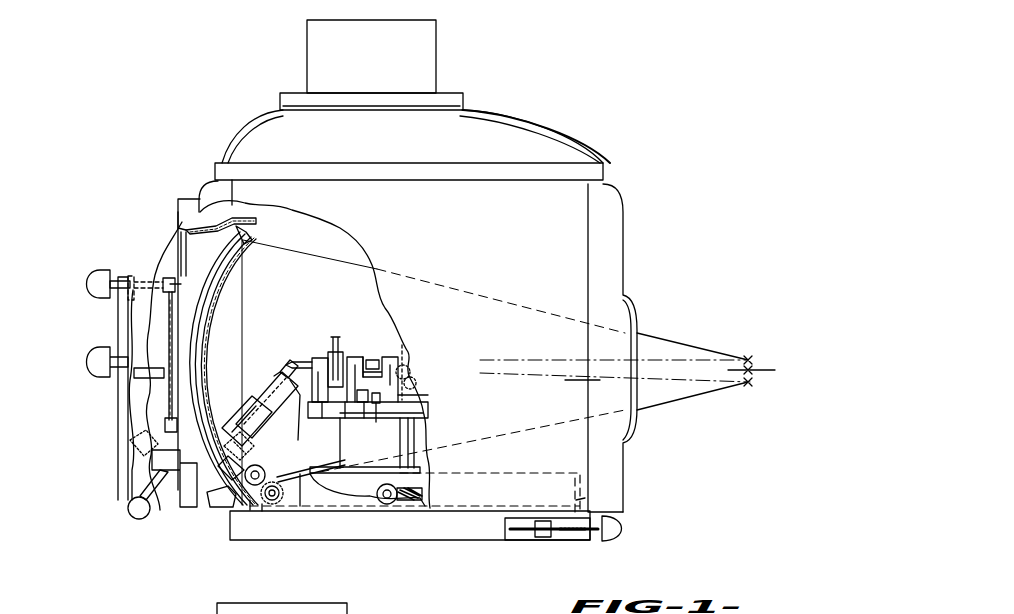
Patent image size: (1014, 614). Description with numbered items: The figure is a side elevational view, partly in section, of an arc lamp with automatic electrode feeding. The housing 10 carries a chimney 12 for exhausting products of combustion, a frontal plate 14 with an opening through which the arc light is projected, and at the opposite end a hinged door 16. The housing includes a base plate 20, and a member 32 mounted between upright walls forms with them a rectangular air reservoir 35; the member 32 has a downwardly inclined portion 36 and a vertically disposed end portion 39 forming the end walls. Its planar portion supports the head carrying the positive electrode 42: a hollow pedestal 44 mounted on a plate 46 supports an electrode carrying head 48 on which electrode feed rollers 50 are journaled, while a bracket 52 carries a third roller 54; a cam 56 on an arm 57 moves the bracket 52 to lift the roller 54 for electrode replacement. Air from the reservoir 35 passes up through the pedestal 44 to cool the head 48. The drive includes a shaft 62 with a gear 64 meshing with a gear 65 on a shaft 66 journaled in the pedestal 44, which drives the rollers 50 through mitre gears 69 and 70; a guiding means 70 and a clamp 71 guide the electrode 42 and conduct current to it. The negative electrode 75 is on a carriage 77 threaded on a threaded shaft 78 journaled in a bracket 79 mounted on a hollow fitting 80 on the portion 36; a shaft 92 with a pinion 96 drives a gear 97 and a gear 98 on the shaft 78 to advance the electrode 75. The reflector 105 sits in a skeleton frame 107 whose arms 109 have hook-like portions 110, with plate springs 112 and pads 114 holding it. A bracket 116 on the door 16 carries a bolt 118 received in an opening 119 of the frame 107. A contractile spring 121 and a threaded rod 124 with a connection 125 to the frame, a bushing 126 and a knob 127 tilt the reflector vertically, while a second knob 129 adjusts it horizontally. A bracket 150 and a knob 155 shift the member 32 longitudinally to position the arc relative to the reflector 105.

The housing 10 is at (600, 184).
The chimney or vent 12 is at (428, 45).
The frontal plate or member 14 is at (613, 212).
The door 16 is at (148, 232).
The base plate 20 is at (440, 516).
The member 32 is at (575, 473).
The chamber or air reservoir 35 is at (372, 498).
The downwardly inclined portion 36 is at (308, 503).
The vertically disposed portion 39 is at (582, 498).
The positive electrode 42 is at (385, 340).
The pedestal 44 is at (342, 450).
The plate 46 is at (400, 458).
The electrode carrying head 48 is at (410, 402).
The electrode feed rollers 50 is at (360, 350).
The bracket 52 is at (376, 350).
The third roller 54 is at (344, 355).
The cam 56 is at (355, 412).
The arm 57 is at (375, 422).
The shaft 62 is at (384, 505).
The gear 64 is at (405, 482).
The gear 65 is at (420, 498).
The shaft 66 is at (414, 424).
The mitre gear 69 is at (418, 378).
The means 70 is at (318, 358).
The clamp 71 is at (334, 350).
The negative electrode 75 is at (276, 368).
The carriage 77 is at (242, 418).
The threaded shaft 78 is at (268, 398).
The bracket 79 is at (298, 436).
The hollow fitting 80 is at (320, 466).
The shaft 92 is at (258, 512).
The pinion 96 is at (274, 506).
The gear 97 is at (282, 458).
The gear 98 is at (222, 448).
The reflector 105 is at (250, 240).
The skeleton frame 107 is at (182, 228).
The arms or portions 109 is at (212, 506).
The hook-like portions 110 is at (245, 512).
The plate springs 112 is at (194, 285).
The pads 114 is at (216, 267).
The bracket 116 is at (150, 390).
The threaded member or bolt 118 is at (142, 408).
The opening 119 is at (132, 432).
The contractile spring 121 is at (128, 462).
The threaded rod 124 is at (96, 272).
The connection 125 is at (163, 282).
The bushing 126 is at (112, 302).
The manipulating knob 127 is at (98, 300).
The second manipulating knob 129 is at (92, 364).
The bracket 150 is at (530, 542).
The manipulating knob 155 is at (630, 528).